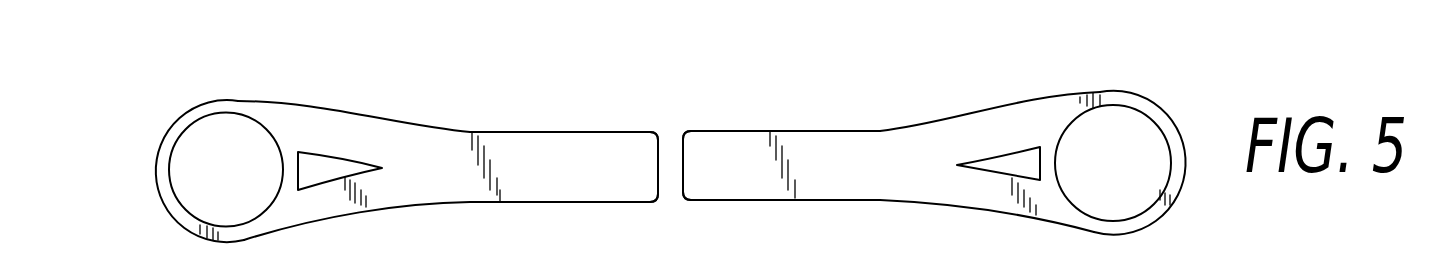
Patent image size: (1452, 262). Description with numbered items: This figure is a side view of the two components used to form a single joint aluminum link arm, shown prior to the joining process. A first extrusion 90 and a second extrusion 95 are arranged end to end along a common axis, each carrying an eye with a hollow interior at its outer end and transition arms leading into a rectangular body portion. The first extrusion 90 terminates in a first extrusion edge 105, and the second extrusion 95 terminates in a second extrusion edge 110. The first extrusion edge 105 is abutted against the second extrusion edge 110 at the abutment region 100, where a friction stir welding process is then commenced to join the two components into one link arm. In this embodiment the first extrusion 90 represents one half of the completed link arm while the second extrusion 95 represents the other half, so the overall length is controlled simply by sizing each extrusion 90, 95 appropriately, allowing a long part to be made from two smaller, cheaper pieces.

The first extrusion 90 is at (582, 174).
The second extrusion 95 is at (883, 176).
The gap between halves 100 is at (660, 150).
The first extrusion edge 105 is at (668, 150).
The second extrusion edge 110 is at (685, 184).